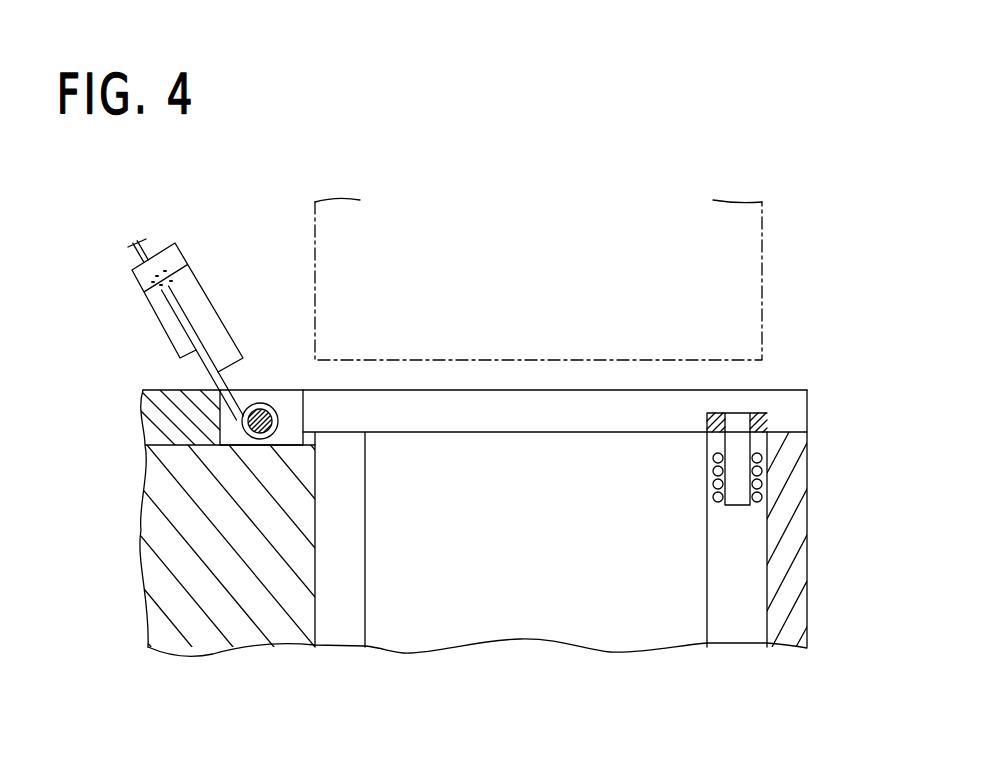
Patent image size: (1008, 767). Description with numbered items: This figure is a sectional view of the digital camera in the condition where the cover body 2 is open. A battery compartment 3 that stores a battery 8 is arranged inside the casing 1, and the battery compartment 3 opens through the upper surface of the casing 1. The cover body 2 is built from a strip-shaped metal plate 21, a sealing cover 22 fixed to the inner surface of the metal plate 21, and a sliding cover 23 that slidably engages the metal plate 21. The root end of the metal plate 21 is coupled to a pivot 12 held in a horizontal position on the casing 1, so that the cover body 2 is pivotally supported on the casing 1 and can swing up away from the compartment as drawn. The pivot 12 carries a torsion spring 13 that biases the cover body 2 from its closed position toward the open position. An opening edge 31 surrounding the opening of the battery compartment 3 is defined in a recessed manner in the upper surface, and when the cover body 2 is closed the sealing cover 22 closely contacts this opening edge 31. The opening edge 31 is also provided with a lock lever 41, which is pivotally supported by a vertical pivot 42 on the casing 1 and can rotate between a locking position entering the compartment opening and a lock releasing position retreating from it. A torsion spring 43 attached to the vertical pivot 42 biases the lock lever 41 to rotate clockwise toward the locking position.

The casing 1 is at (807, 540).
The cover body 2 is at (214, 301).
The battery compartment 3 is at (577, 617).
The battery 8 is at (763, 238).
The pivot 12 is at (261, 413).
The torsion spring 13 is at (260, 438).
The metal plate 21 is at (224, 393).
The sealing cover 22 is at (196, 297).
The sliding cover 23 is at (186, 222).
The opening edge 31 is at (481, 431).
The lock lever 41 is at (756, 413).
The vertical pivot 42 is at (742, 448).
The torsion spring 43 is at (762, 472).